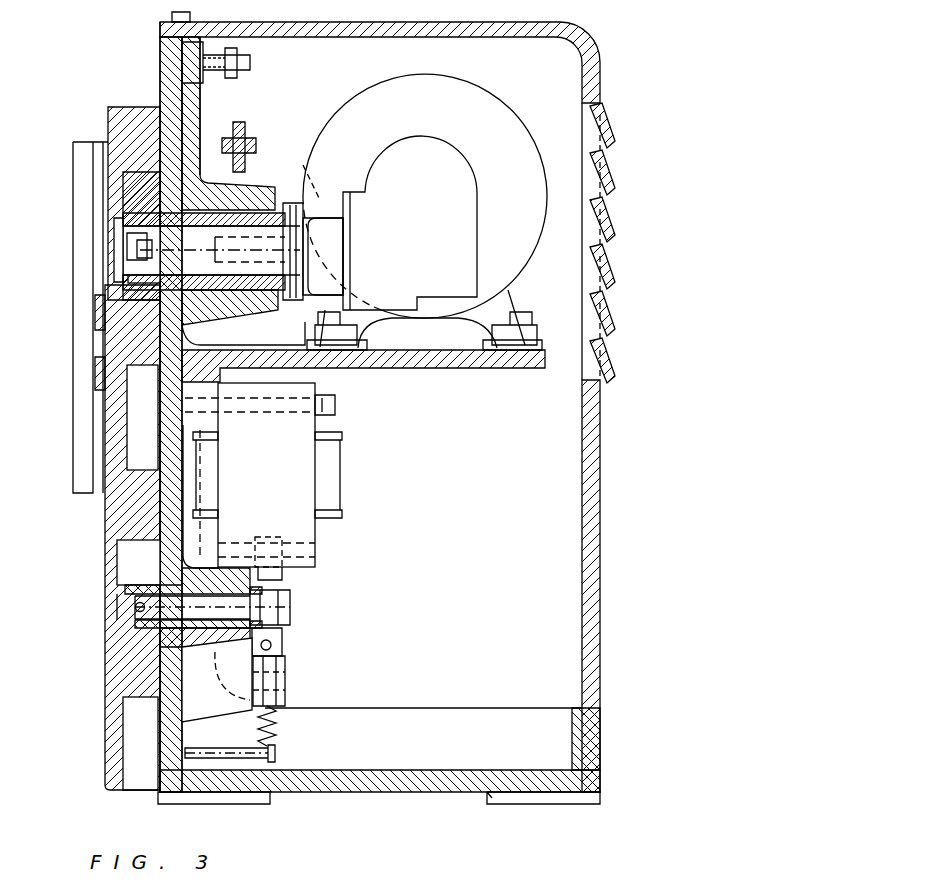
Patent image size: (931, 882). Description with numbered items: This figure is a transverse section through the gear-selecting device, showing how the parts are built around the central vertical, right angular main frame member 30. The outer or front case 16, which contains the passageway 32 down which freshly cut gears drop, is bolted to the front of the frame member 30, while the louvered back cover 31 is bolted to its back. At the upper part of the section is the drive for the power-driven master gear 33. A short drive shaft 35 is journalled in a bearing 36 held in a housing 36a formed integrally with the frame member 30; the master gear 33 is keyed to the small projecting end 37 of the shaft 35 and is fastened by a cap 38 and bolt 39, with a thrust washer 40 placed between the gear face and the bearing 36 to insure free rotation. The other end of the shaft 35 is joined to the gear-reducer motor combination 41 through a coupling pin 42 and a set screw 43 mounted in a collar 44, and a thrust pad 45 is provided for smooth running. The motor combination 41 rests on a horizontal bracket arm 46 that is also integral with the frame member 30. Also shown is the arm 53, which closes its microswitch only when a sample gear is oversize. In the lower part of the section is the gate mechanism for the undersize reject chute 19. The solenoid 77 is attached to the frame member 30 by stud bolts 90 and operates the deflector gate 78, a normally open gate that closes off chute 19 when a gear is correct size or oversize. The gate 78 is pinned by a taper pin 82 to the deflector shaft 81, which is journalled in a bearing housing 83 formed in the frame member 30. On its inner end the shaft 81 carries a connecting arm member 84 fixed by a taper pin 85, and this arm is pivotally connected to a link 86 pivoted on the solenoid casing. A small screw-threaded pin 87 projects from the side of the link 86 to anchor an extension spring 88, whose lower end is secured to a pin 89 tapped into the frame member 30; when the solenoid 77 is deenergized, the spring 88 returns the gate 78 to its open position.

The housing 16 is at (108, 677).
The undersize reject chute 19 is at (148, 790).
The main frame member 30 is at (428, 752).
The louvered back cover 31 is at (602, 70).
The passageway 32 is at (150, 520).
The power-driven master gear 33 is at (112, 172).
The drive shaft 35 is at (292, 205).
The bearing 36 is at (240, 200).
The bearing housing 36a is at (262, 192).
The projecting end of shaft 37 is at (225, 262).
The cap 38 is at (112, 214).
The bolt 39 is at (90, 260).
The thrust washer 40 is at (162, 222).
The gear-reducer motor combination 41 is at (520, 212).
The coupling pin 42 is at (243, 317).
The set screw 43 is at (310, 202).
The collar 44 is at (302, 278).
The thrust pad 45 is at (312, 178).
The horizontal bracket arm 46 is at (428, 368).
The arm 53 is at (246, 126).
The solenoid 77 is at (298, 525).
The deflector gate 78 is at (136, 598).
The deflector shaft 81 is at (292, 606).
The taper pin 82 is at (136, 607).
The bearing housing 83 is at (214, 652).
The connecting arm member 84 is at (290, 694).
The taper pin 85 is at (283, 588).
The link 86 is at (284, 650).
The screw-threaded pin 87 is at (292, 625).
The extension spring 88 is at (278, 730).
The pin 89 is at (278, 756).
The stud bolt 90 is at (336, 405).